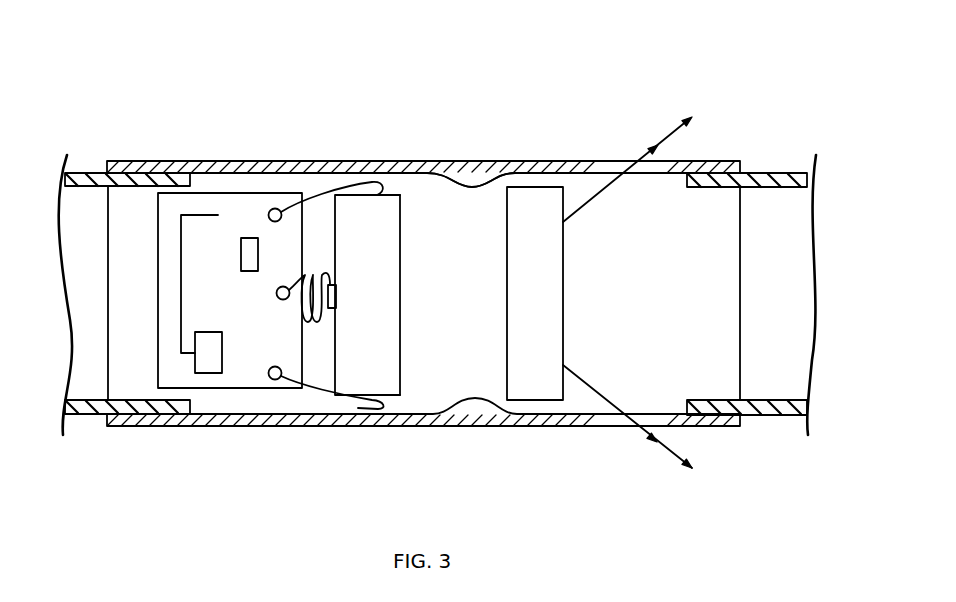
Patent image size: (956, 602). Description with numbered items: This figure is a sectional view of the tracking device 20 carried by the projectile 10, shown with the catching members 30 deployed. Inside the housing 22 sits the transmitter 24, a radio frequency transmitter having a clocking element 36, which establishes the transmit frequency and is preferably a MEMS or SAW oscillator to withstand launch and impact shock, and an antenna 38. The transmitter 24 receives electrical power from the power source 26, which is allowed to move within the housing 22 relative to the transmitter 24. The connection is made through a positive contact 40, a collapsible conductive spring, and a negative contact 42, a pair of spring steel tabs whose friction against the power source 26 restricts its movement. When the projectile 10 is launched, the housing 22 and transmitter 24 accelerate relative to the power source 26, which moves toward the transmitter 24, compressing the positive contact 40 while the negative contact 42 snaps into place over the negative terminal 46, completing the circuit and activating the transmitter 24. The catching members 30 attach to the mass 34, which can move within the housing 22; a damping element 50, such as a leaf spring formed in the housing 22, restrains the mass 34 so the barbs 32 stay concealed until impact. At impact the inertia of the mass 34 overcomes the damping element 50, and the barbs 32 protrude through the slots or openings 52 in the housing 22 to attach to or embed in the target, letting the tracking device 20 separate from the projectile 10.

The projectile 10 is at (777, 177).
The tracking device 20 is at (288, 75).
The housing 22 is at (472, 427).
The transmitter 24 is at (177, 378).
The power source 26 is at (390, 317).
The catching members 30 is at (656, 146).
The barbs 32 is at (692, 115).
The mass 34 is at (557, 294).
The clocking element 36 is at (250, 237).
The antenna 38 is at (202, 215).
The positive contact 40 is at (321, 322).
The negative contact 42 is at (358, 410).
The negative terminal 46 is at (402, 258).
The damping element 50 is at (458, 172).
The slots or openings 52 is at (648, 172).